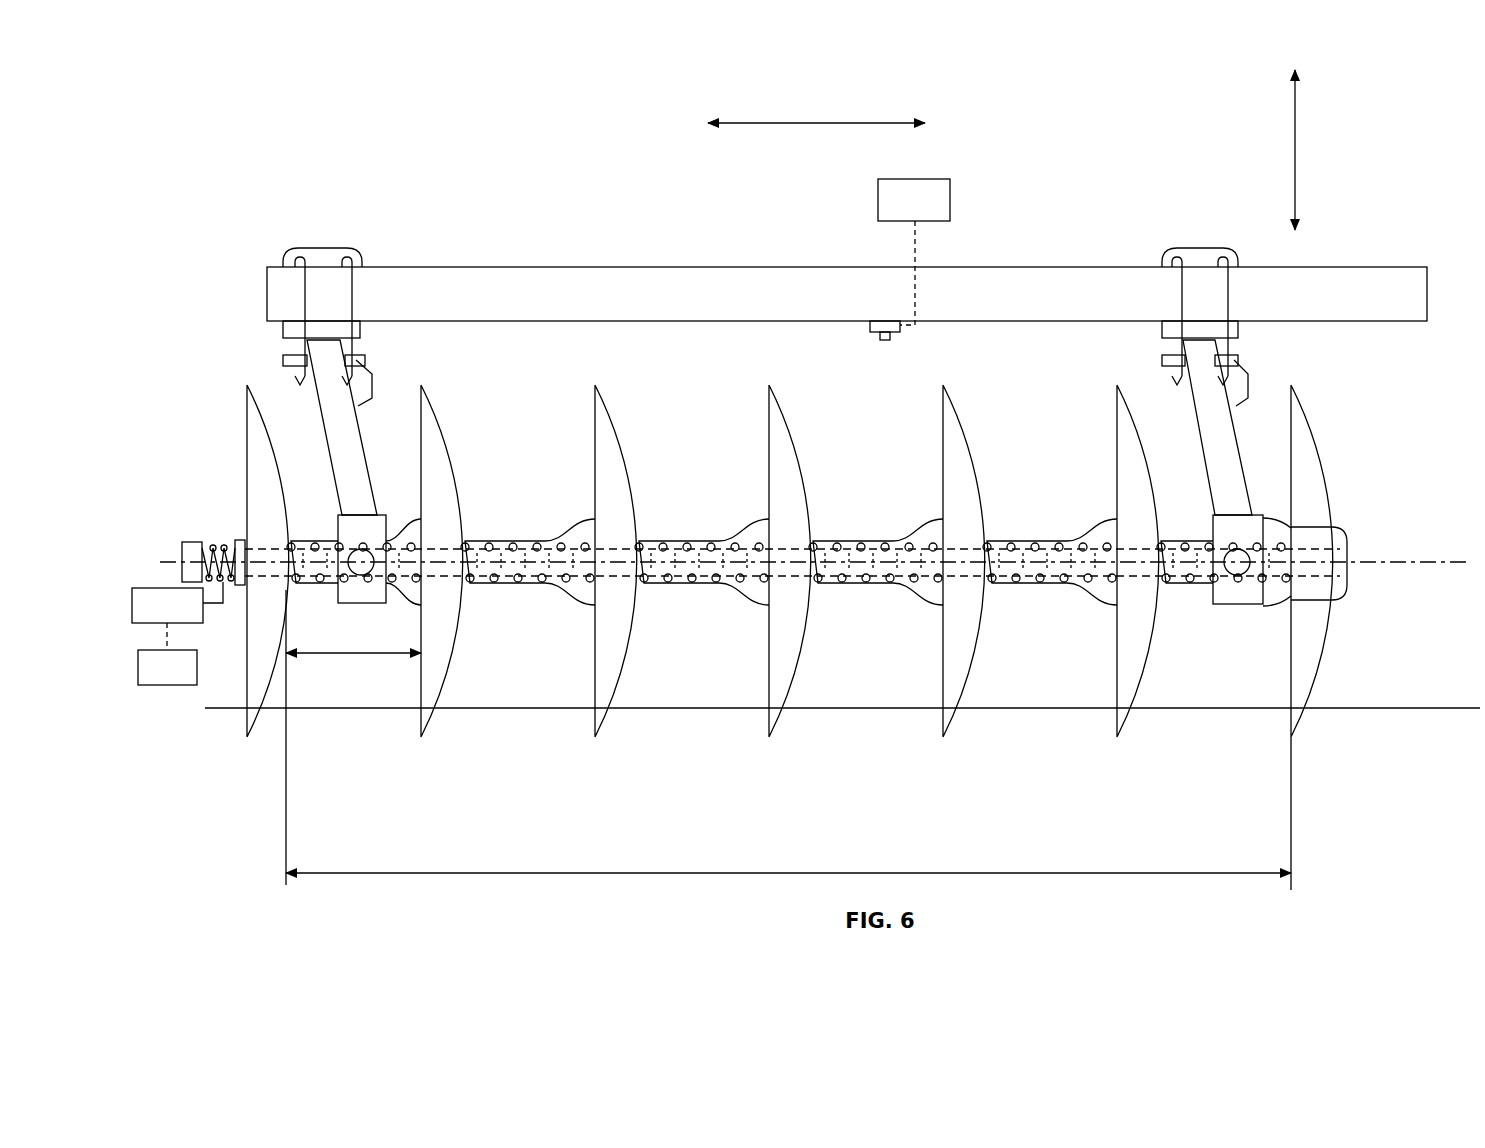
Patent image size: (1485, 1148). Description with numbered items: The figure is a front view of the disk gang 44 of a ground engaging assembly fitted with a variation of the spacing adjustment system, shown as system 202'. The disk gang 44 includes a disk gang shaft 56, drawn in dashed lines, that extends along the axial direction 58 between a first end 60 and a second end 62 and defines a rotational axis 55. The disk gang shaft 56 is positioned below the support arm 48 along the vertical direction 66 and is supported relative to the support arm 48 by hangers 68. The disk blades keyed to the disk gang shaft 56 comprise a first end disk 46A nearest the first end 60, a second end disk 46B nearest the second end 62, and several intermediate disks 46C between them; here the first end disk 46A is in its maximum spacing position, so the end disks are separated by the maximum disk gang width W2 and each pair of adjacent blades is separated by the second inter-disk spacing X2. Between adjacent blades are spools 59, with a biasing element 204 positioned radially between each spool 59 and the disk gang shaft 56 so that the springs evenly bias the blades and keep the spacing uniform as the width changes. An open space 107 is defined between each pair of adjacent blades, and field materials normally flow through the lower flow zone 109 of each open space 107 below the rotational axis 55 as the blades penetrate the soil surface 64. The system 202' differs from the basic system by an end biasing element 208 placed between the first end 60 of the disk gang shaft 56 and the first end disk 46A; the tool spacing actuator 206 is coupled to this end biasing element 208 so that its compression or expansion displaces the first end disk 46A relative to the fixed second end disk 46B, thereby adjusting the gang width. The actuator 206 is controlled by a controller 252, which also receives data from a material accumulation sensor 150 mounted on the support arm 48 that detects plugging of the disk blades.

The disk gang 44 is at (285, 220).
The support arm 48 is at (668, 266).
The axial direction 58 is at (805, 121).
The vertical direction 66 is at (1296, 154).
The system 202' is at (1110, 127).
The controller 252 is at (544, 432).
The material accumulation sensor 150 is at (885, 342).
The open space 107 is at (467, 425).
The hanger 68 is at (331, 410).
The biasing element 204 is at (319, 538).
The first end 60 is at (182, 548).
The end biasing element 208 is at (226, 548).
The tool spacing actuator 206 is at (158, 588).
The second end 62 is at (1358, 547).
The rotational axis 55 is at (1427, 562).
The disk gang shaft 56 is at (1312, 577).
The soil surface 64 is at (1365, 708).
The spool 59 is at (527, 591).
The lower flow zone 109 is at (780, 658).
The first end disk 46A is at (247, 737).
The intermediate disk 46C is at (421, 737).
The second end disk 46B is at (1289, 722).
The second inter-disk spacing X2 is at (337, 656).
The maximum disk gang width W2 is at (470, 870).